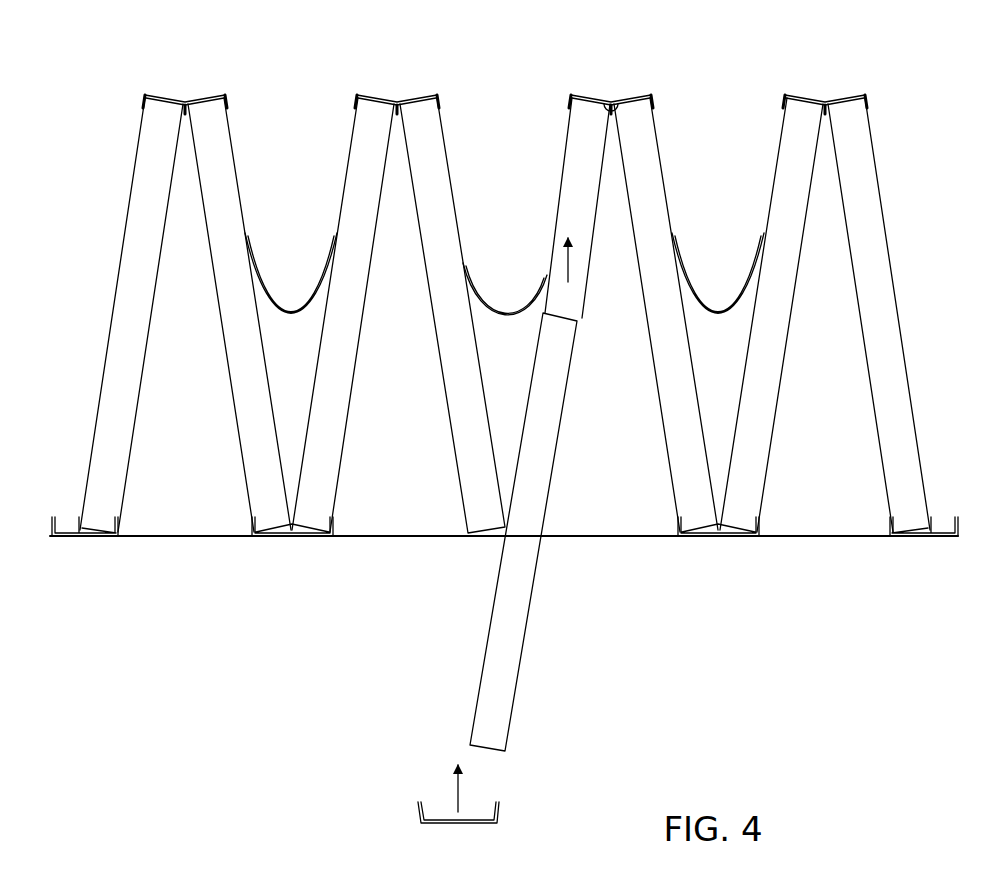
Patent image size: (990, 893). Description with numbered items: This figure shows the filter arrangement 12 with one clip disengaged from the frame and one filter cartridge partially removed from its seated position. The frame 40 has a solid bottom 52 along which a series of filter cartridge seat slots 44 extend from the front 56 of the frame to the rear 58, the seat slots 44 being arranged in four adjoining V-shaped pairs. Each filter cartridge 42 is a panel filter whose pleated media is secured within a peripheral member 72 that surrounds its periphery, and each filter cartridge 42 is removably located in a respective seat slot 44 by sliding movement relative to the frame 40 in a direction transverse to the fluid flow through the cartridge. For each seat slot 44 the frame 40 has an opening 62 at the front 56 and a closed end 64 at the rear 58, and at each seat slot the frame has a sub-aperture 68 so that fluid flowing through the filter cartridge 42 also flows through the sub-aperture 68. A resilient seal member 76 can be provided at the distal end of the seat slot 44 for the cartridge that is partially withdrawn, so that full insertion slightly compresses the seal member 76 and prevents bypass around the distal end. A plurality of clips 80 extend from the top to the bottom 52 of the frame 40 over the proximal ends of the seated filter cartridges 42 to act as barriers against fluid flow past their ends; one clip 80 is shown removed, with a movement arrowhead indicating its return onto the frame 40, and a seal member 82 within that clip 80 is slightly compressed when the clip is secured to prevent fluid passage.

The filter arrangement 12 is at (75, 120).
The frame 40 is at (291, 296).
The filter cartridge 42 is at (122, 468).
The filter cartridge seat slot 44 is at (161, 120).
The bottom 52 is at (184, 538).
The front 56 is at (392, 538).
The rear 58 is at (398, 95).
The opening 62 is at (480, 552).
The closed end 64 is at (580, 108).
The sub-aperture 68 is at (140, 218).
The peripheral member 72 is at (108, 340).
The seal member 76 is at (612, 100).
The clip 80 is at (92, 540).
The seal member 82 is at (480, 812).